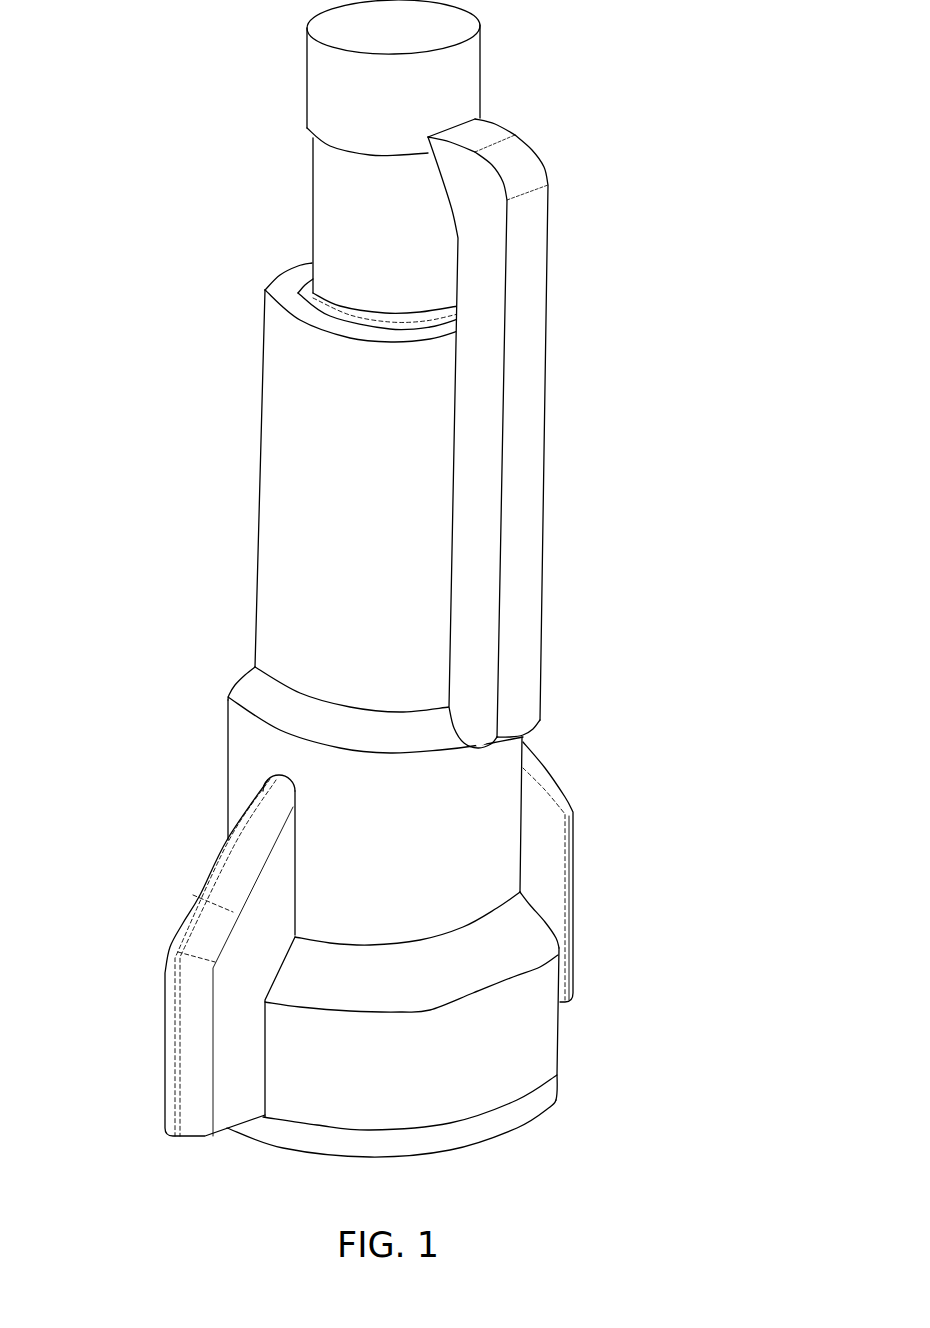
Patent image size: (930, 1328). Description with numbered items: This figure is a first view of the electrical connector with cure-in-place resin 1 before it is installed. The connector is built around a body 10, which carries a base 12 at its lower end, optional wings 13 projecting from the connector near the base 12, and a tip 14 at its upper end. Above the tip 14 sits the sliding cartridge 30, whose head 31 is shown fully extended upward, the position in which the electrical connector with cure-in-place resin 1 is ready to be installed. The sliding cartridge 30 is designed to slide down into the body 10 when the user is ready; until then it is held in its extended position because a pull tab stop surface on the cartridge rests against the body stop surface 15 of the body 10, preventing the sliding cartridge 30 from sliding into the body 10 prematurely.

The electrical connector with cure-in-place resin 1 is at (372, 578).
The body 10 is at (334, 465).
The base 12 is at (475, 787).
The wings 13 is at (600, 830).
The tip 14 is at (292, 354).
The body stop surface 15 is at (252, 692).
The sliding cartridge 30 is at (463, 374).
The head 31 is at (458, 77).